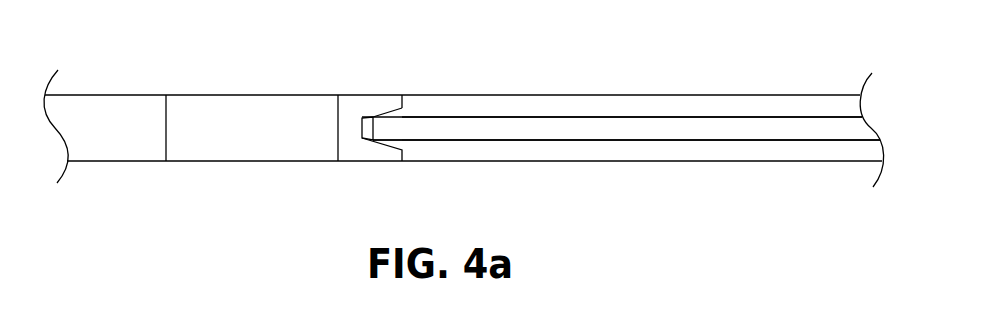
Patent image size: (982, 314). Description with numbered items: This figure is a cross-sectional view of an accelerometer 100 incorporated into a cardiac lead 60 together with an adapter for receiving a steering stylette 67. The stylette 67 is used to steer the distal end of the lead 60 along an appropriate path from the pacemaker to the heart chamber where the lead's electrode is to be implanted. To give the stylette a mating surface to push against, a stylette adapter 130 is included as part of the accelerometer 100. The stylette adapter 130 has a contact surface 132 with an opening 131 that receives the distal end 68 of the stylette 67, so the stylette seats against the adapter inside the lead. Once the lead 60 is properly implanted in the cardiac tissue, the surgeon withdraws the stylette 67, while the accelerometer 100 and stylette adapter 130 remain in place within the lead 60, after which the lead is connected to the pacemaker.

The accelerometer 100 is at (245, 94).
The stylette adapter 130 is at (365, 95).
The opening 131 is at (404, 108).
The contact surface 132 is at (362, 133).
The cardiac lead 60 is at (627, 82).
The steering stylette 67 is at (526, 123).
The distal end of stylette 68 is at (387, 127).